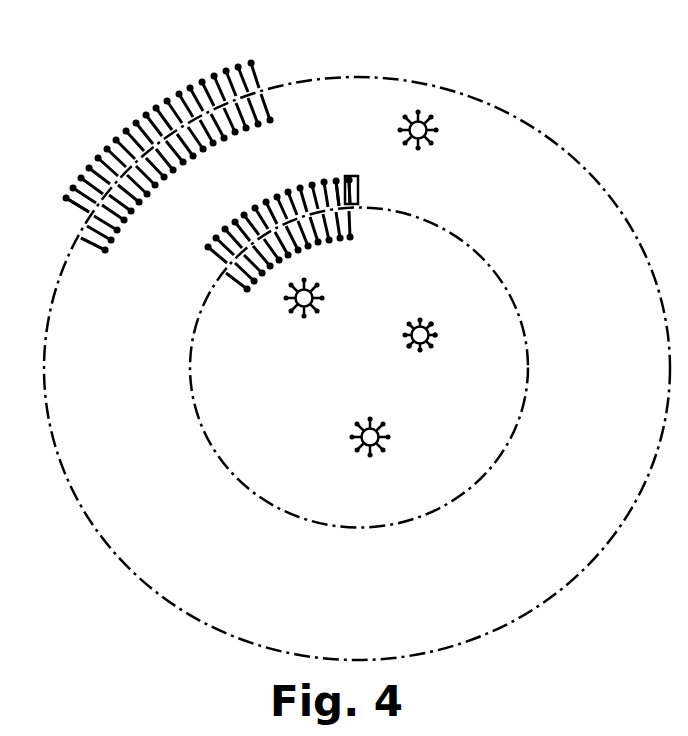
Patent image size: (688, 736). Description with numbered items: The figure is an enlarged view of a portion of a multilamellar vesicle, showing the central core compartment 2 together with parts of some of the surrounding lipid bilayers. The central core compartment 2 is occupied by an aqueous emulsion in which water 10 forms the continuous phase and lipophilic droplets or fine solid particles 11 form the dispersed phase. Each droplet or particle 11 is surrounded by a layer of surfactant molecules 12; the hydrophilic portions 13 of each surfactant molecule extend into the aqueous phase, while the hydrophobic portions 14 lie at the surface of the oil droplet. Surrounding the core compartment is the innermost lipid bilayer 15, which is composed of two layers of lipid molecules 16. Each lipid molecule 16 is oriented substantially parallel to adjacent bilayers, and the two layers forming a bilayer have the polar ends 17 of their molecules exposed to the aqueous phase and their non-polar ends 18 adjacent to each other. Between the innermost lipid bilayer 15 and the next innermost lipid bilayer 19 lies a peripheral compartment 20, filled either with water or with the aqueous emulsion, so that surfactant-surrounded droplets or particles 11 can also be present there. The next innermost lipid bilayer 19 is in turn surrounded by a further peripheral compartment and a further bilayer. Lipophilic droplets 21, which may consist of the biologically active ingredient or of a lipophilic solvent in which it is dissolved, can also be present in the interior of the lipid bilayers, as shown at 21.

The cell 2 is at (383, 303).
The water 10 is at (462, 473).
The lipophilic droplets or fine solid particles 11 is at (428, 348).
The surfactant molecules 12 is at (428, 322).
The hydrophilic portions 13 is at (437, 335).
The particle core 14 is at (412, 350).
The innermost lipid bilayer 15 is at (453, 235).
The lipid molecules 16 is at (358, 188).
The polar ends 17 is at (344, 175).
The non-polar ends 18 is at (352, 232).
The next innermost lipid bilayer 19 is at (320, 78).
The peripheral compartment 20 is at (278, 164).
The lipophilic droplets 21 is at (84, 229).